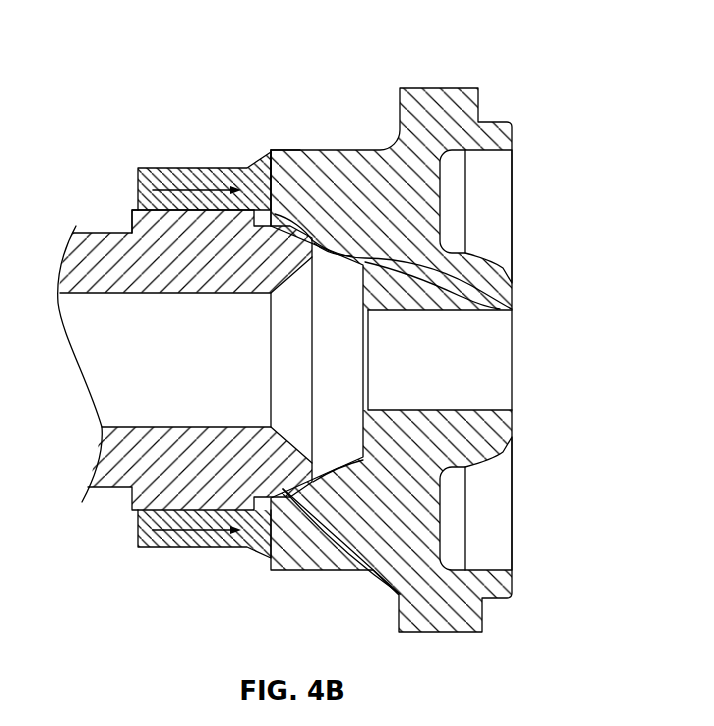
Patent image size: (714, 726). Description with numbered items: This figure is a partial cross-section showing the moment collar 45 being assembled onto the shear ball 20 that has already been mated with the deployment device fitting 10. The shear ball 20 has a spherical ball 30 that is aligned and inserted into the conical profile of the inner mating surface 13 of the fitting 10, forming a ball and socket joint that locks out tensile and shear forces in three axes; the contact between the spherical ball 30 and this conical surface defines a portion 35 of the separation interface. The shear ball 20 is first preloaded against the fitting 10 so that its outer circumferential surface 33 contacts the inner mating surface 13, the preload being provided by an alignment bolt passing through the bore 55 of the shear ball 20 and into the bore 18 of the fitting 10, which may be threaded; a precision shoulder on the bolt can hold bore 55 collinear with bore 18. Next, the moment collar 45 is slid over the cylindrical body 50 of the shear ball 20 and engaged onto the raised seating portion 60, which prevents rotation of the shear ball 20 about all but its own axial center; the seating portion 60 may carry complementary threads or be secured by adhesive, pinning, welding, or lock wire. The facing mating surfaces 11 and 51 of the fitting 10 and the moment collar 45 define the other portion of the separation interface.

The fitting 10 is at (383, 137).
The mating surface 11 is at (268, 152).
The inner mating surface 13 is at (512, 310).
The bore 18 is at (428, 371).
The shear ball 20 is at (220, 112).
The spherical ball 30 is at (400, 594).
The outer circumferential surface 33 is at (273, 222).
The separation interface portion 35 is at (400, 310).
The moment collar 45 is at (172, 163).
The cylindrical body 50 is at (118, 260).
The mating surface 51 is at (273, 186).
The bore 55 is at (112, 360).
The raised seating portion 60 is at (137, 200).